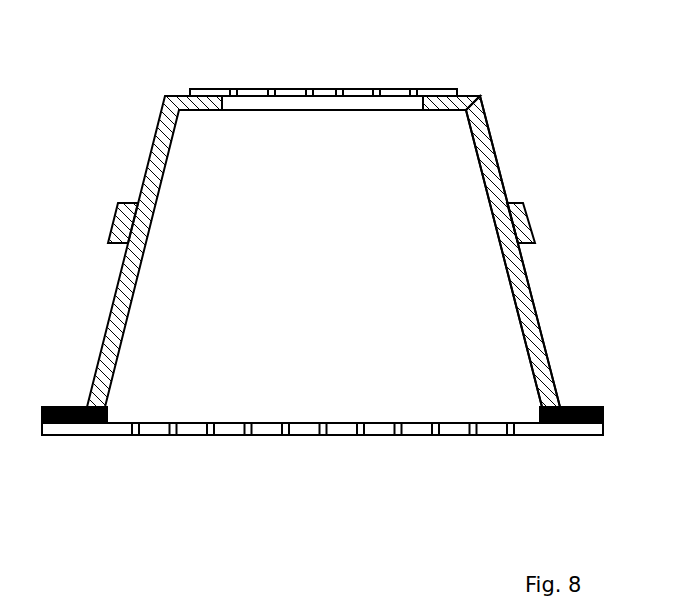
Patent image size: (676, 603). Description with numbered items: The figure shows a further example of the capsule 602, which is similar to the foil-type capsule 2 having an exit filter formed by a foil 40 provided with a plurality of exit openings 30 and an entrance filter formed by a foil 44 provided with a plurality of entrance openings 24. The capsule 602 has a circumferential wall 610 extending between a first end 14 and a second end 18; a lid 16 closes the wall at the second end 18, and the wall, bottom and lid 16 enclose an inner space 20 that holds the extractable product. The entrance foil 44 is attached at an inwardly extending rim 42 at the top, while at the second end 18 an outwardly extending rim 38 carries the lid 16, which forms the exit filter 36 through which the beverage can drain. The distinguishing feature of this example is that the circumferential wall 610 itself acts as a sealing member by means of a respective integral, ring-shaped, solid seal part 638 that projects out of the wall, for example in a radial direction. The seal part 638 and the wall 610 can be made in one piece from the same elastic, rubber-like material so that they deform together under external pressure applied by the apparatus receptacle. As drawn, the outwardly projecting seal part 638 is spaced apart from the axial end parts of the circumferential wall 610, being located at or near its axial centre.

The exchangeable capsule 2 is at (626, 452).
The first end 14 is at (478, 122).
The lid 16 is at (552, 435).
The second end 18 is at (553, 387).
The inner space 20 is at (189, 282).
The entrance openings 24 is at (304, 89).
The exit openings 30 is at (210, 435).
The exit filter 36 is at (323, 450).
The outwardly extending rim 38 is at (603, 416).
The foil 40 is at (95, 435).
The inwardly extending rim 42 is at (461, 93).
The foil 44 is at (435, 89).
The capsule 602 is at (580, 146).
The circumferential wall 610 is at (533, 305).
The seal part 638 is at (118, 218).